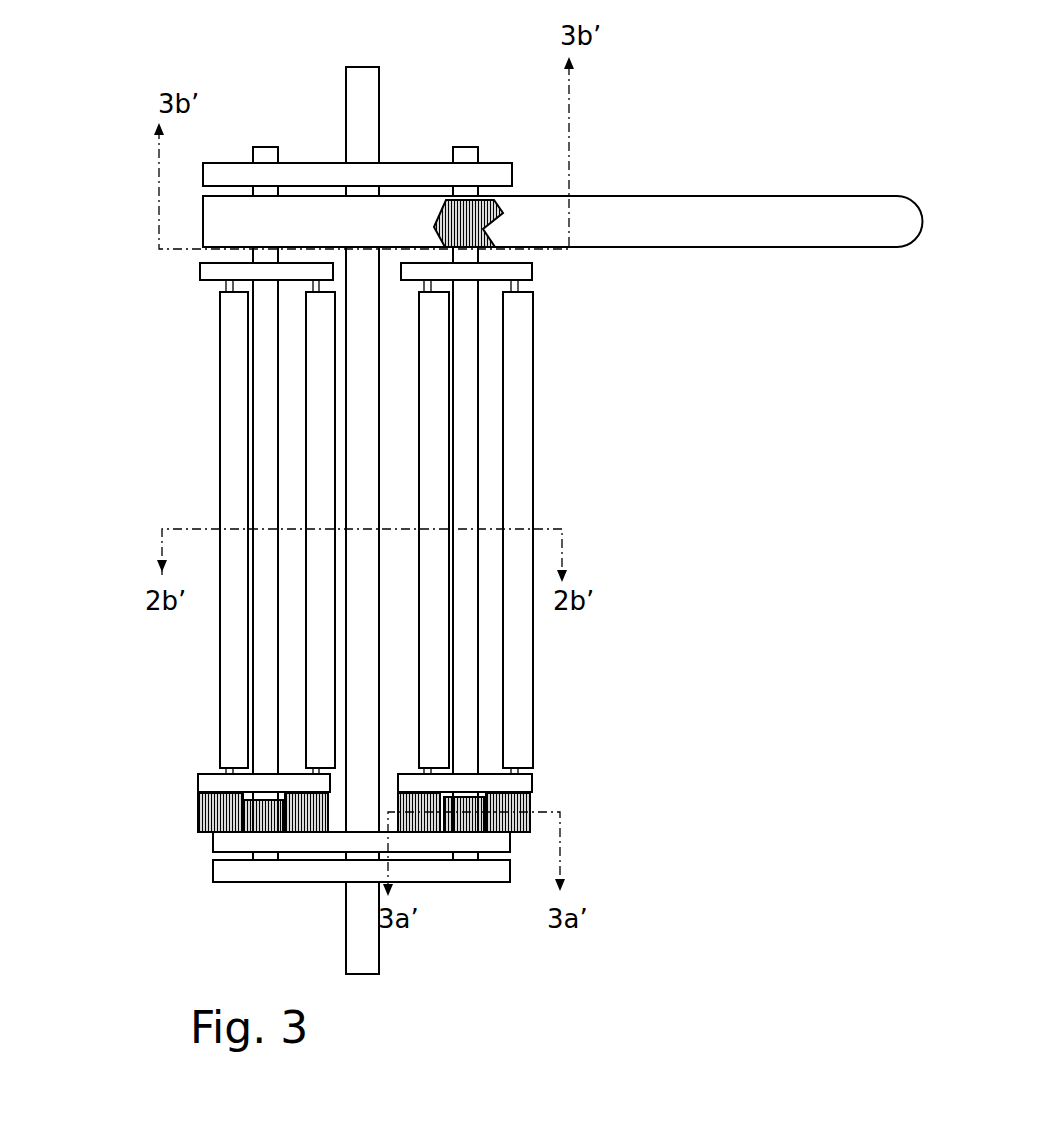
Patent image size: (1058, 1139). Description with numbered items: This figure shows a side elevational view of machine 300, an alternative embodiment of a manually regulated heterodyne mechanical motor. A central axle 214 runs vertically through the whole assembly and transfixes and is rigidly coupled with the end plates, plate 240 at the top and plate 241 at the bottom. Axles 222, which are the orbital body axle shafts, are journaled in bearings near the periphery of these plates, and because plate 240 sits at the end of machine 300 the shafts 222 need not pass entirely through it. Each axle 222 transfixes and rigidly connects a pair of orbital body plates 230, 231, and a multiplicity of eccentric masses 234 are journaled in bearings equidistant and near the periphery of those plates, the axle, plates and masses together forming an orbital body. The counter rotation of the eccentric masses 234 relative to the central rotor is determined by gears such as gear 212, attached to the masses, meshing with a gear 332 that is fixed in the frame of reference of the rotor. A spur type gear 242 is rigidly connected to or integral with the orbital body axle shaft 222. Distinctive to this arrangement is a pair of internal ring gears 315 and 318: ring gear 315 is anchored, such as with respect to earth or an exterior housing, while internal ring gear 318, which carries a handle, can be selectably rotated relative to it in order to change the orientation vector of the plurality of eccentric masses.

The machine 300 is at (473, 520).
The central axle 214 is at (367, 940).
The axle 222 is at (468, 735).
The eccentric masses 234 is at (527, 423).
The plate 240 is at (490, 172).
The internal ring gear 318 is at (732, 215).
The spur type gear 242 is at (500, 215).
The orbital body plate 231 is at (523, 277).
The orbital body plate 230 is at (517, 785).
The gear 212 is at (493, 820).
The gear 332 is at (484, 795).
The internal ring gear 315 is at (487, 843).
The plate 241 is at (487, 877).